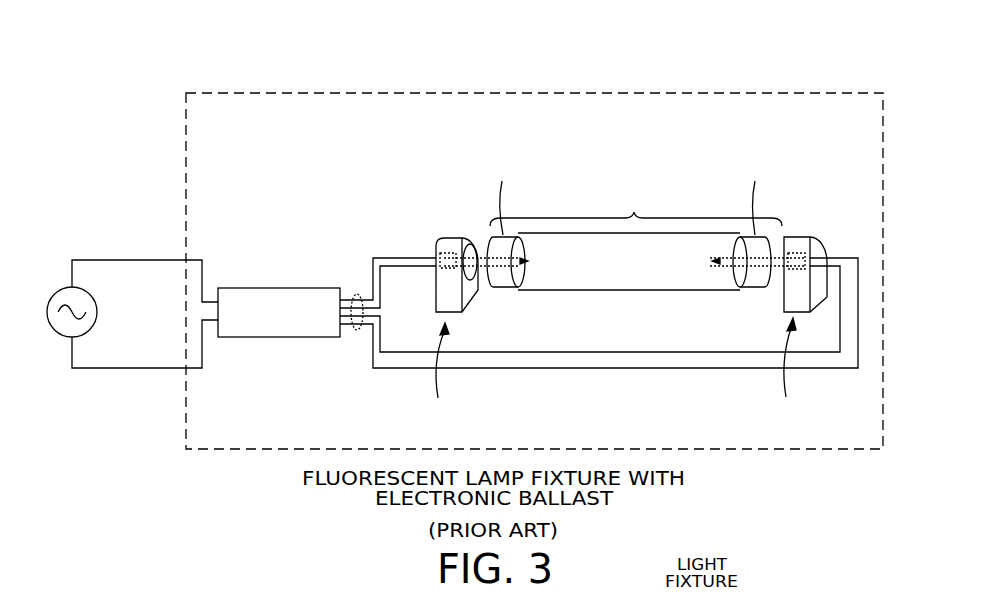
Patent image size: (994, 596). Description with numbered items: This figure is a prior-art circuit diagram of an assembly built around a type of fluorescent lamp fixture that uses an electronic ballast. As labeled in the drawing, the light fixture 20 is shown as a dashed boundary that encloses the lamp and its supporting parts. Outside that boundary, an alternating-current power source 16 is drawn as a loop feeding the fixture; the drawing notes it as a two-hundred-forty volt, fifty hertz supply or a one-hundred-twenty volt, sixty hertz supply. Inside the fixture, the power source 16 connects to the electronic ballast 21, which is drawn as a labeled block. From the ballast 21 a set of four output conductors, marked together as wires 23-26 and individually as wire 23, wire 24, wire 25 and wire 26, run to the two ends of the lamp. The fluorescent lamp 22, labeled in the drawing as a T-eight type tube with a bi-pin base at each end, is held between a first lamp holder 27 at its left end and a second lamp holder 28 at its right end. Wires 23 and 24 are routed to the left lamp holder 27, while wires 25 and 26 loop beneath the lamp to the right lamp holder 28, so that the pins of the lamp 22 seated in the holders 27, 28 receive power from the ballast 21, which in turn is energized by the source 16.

The AC power source 16 is at (94, 321).
The light fixture 20 is at (719, 92).
The electronic ballast 21 is at (272, 338).
The T8 fluorescent lamp 22 is at (634, 212).
The ballast output wires 23-26 is at (586, 307).
The ballast output wire 23 is at (388, 279).
The ballast output wire 24 is at (388, 287).
The ballast output wire 25 is at (590, 309).
The ballast output wire 26 is at (356, 293).
The T8 lamp holder 27 is at (455, 237).
The T8 lamp holder 28 is at (808, 237).